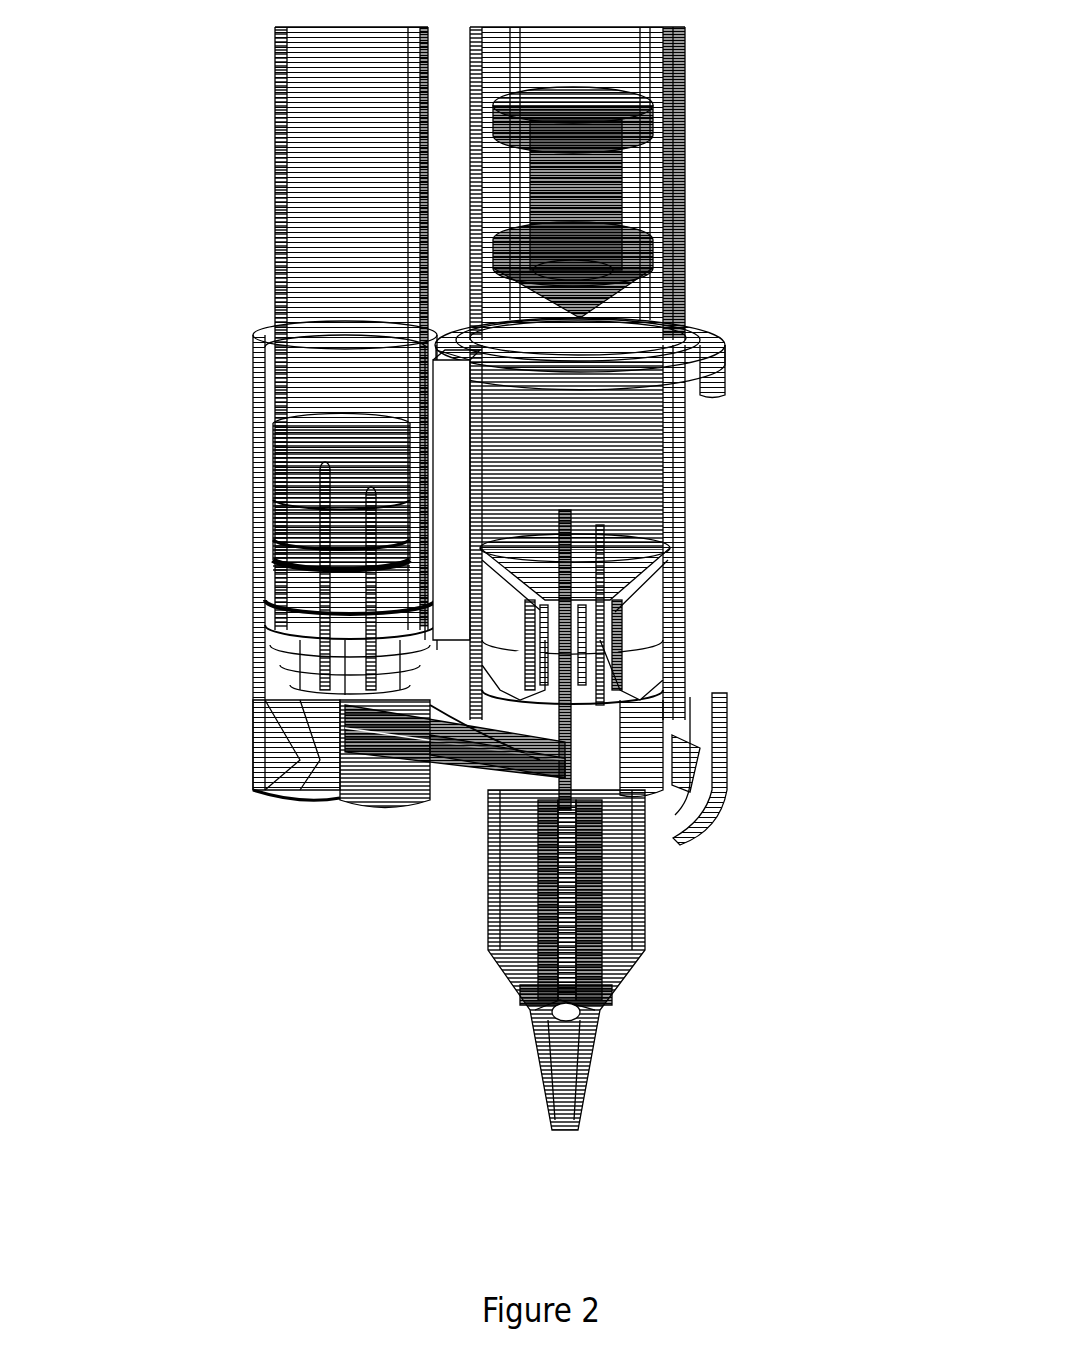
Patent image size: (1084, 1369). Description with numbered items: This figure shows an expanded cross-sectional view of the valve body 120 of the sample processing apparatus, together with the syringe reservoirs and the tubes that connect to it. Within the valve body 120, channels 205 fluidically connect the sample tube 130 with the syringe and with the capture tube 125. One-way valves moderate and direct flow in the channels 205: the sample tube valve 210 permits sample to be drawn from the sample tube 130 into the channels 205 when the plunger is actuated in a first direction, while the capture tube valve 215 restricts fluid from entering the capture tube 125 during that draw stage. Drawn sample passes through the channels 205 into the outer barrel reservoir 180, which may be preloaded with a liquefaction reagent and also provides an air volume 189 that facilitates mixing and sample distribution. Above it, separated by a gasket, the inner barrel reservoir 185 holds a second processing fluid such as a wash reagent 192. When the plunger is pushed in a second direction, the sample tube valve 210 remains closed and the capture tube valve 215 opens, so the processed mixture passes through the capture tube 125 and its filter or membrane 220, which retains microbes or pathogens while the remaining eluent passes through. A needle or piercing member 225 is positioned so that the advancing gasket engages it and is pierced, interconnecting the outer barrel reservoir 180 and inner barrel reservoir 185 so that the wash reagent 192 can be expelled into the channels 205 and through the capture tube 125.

The sample tube 130 is at (275, 226).
The valve body 120 is at (248, 652).
The inner barrel reservoir 185 is at (668, 47).
The wash reagent 192 is at (582, 186).
The outer barrel reservoir 180 is at (690, 312).
The air volume 189 is at (604, 452).
The piercing member 225 is at (578, 566).
The channels 205 is at (462, 772).
The sample tube valve 210 is at (506, 765).
The capture tube valve 215 is at (565, 808).
The capture tube 125 is at (630, 990).
The filter/membrane 220 is at (562, 1005).